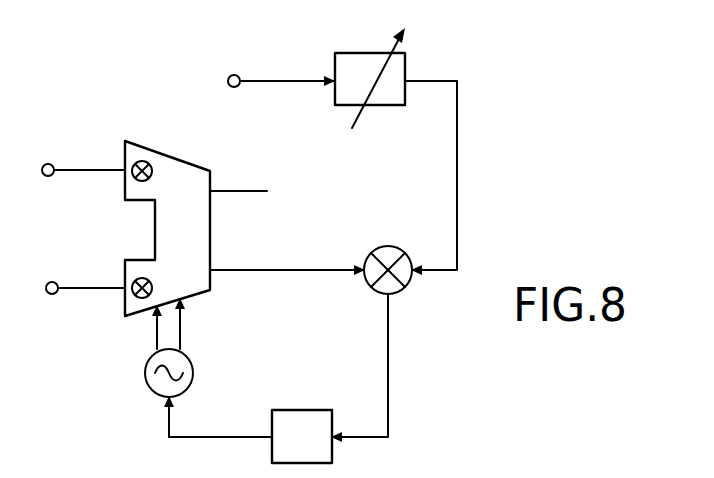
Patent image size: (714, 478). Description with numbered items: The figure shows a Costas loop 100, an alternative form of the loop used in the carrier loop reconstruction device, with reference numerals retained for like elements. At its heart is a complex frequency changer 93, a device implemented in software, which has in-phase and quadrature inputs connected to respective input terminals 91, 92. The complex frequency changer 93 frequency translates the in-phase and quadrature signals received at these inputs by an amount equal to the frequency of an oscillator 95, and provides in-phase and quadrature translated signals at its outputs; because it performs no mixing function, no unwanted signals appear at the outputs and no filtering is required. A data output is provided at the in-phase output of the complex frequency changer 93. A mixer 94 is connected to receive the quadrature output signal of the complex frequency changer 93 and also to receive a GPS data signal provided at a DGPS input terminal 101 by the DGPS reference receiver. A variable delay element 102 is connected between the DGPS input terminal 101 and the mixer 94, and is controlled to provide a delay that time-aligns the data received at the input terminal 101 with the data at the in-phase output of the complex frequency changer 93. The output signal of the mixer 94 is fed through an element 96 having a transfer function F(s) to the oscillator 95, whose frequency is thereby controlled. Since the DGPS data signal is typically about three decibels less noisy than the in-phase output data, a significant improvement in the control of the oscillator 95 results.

The Costas loop 100 is at (598, 139).
The input terminal 91 is at (48, 176).
The input terminal 92 is at (52, 294).
The complex frequency changer 93 is at (167, 156).
The mixer 94 is at (380, 249).
The oscillator 95 is at (186, 356).
The element having transfer function F(s) 96 is at (301, 410).
The DGPS input terminal 101 is at (236, 74).
The variable delay element 102 is at (391, 105).